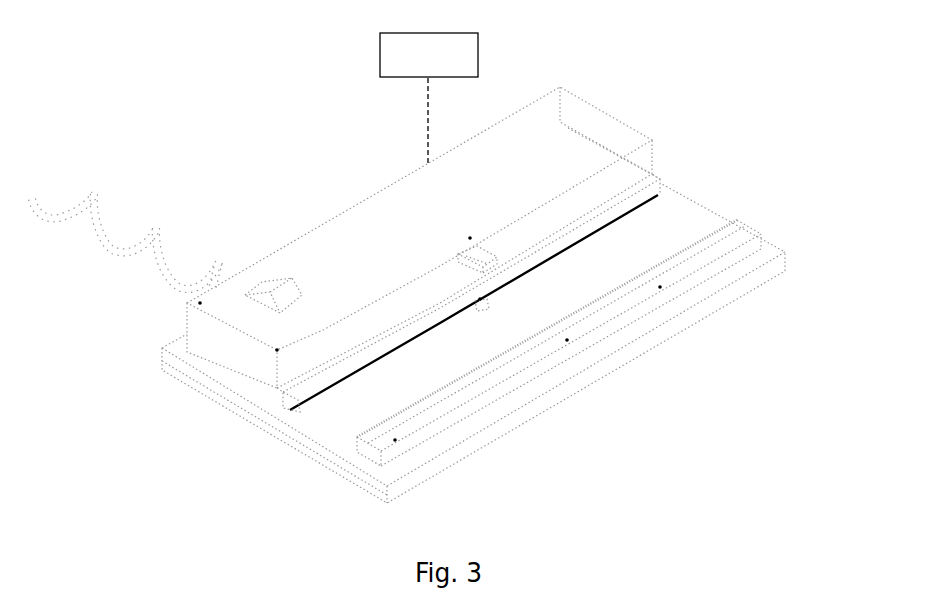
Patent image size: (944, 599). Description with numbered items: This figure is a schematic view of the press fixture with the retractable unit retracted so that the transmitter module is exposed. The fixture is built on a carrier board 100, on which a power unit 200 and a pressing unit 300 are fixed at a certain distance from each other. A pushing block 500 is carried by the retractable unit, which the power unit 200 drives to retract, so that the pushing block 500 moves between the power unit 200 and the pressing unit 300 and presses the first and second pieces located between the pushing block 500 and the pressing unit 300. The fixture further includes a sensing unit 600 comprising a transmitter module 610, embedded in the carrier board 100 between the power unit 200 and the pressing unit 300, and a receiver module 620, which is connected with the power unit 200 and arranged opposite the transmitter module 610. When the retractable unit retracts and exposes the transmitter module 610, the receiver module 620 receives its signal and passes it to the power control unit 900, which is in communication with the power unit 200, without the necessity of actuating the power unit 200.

The carrier board 100 is at (675, 228).
The power unit 200 is at (566, 130).
The pressing unit 300 is at (744, 240).
The pushing block 500 is at (303, 387).
The sensing unit 600 is at (336, 133).
The transmitter module 610 is at (480, 303).
The receiver module 620 is at (476, 250).
The power control unit 900 is at (371, 53).